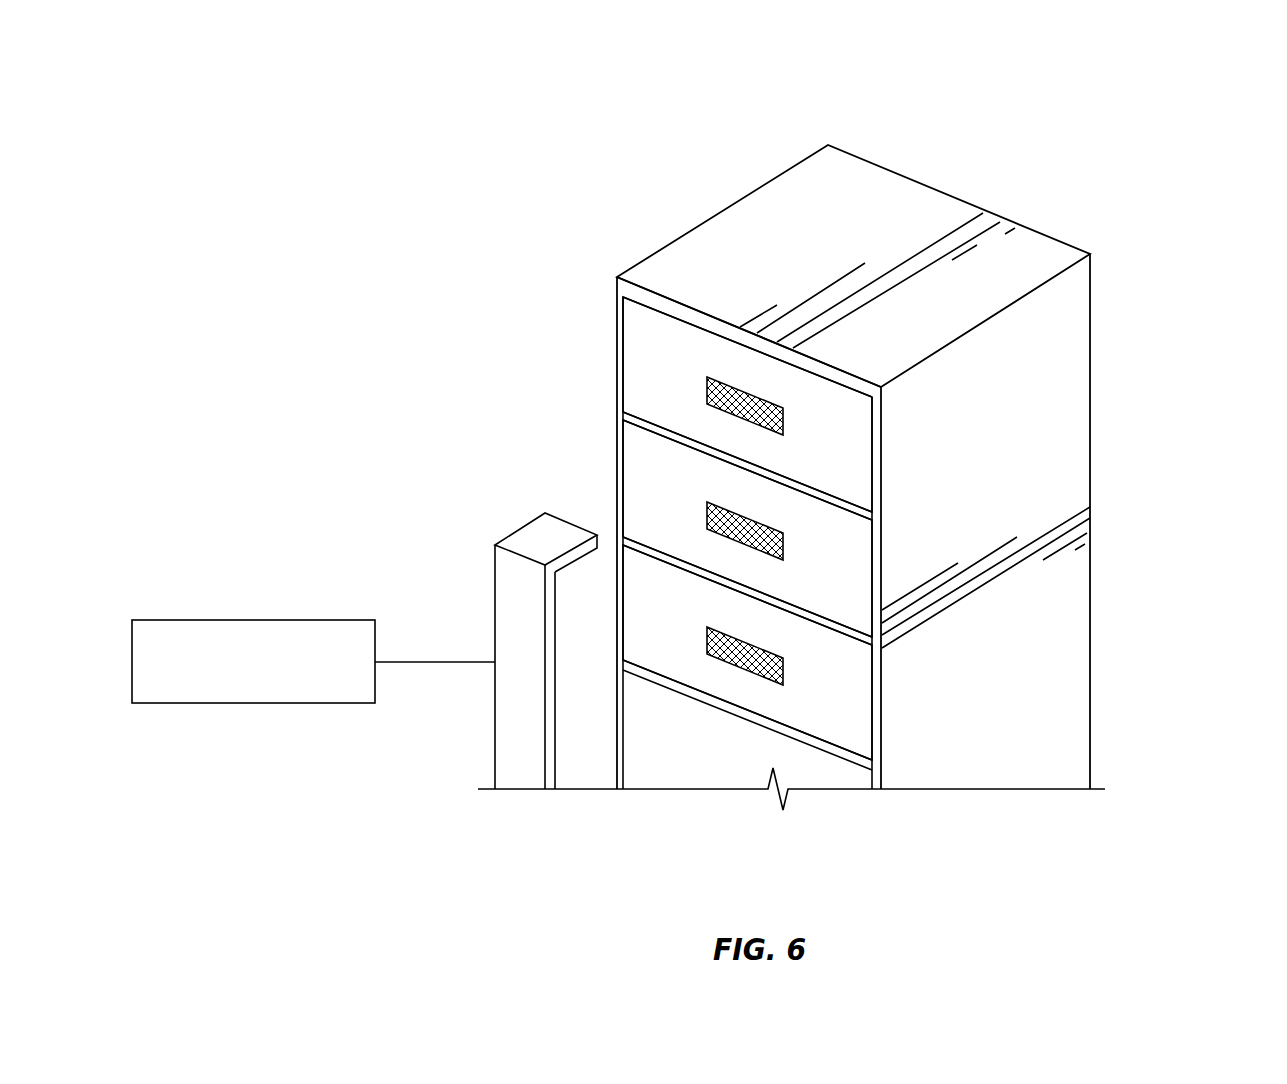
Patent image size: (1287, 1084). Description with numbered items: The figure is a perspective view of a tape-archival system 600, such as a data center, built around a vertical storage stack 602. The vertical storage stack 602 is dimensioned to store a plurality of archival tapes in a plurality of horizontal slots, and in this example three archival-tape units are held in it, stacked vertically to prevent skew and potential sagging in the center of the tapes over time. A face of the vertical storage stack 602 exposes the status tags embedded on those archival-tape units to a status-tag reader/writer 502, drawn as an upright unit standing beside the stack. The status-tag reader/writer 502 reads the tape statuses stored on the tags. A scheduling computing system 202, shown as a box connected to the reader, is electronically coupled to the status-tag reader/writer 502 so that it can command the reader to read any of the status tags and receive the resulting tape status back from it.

The tape-archival system 600 is at (172, 150).
The vertical storage stack 602 is at (935, 188).
The status-tag reader/writer 502 is at (495, 583).
The scheduling computing system 202 is at (313, 661).